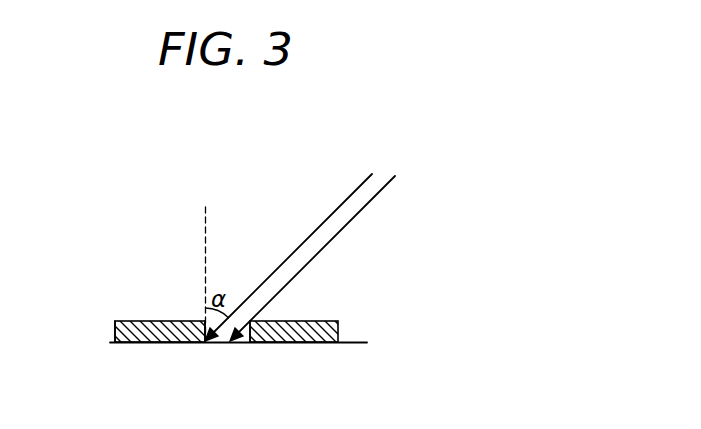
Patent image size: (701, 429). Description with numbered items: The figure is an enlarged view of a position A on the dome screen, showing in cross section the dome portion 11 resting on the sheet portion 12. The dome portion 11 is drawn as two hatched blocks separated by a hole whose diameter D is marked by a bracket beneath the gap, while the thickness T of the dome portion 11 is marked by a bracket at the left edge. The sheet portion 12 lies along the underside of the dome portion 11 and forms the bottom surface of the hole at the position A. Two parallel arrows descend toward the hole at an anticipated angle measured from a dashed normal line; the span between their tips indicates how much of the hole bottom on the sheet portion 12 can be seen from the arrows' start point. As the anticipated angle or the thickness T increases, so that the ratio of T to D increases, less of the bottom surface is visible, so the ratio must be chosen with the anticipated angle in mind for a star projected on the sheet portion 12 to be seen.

The dome portion 11 is at (337, 331).
The sheet portion 12 is at (330, 343).
The position A is at (102, 170).
The thickness of the dome portion T is at (112, 319).
The hole diameter D is at (249, 346).